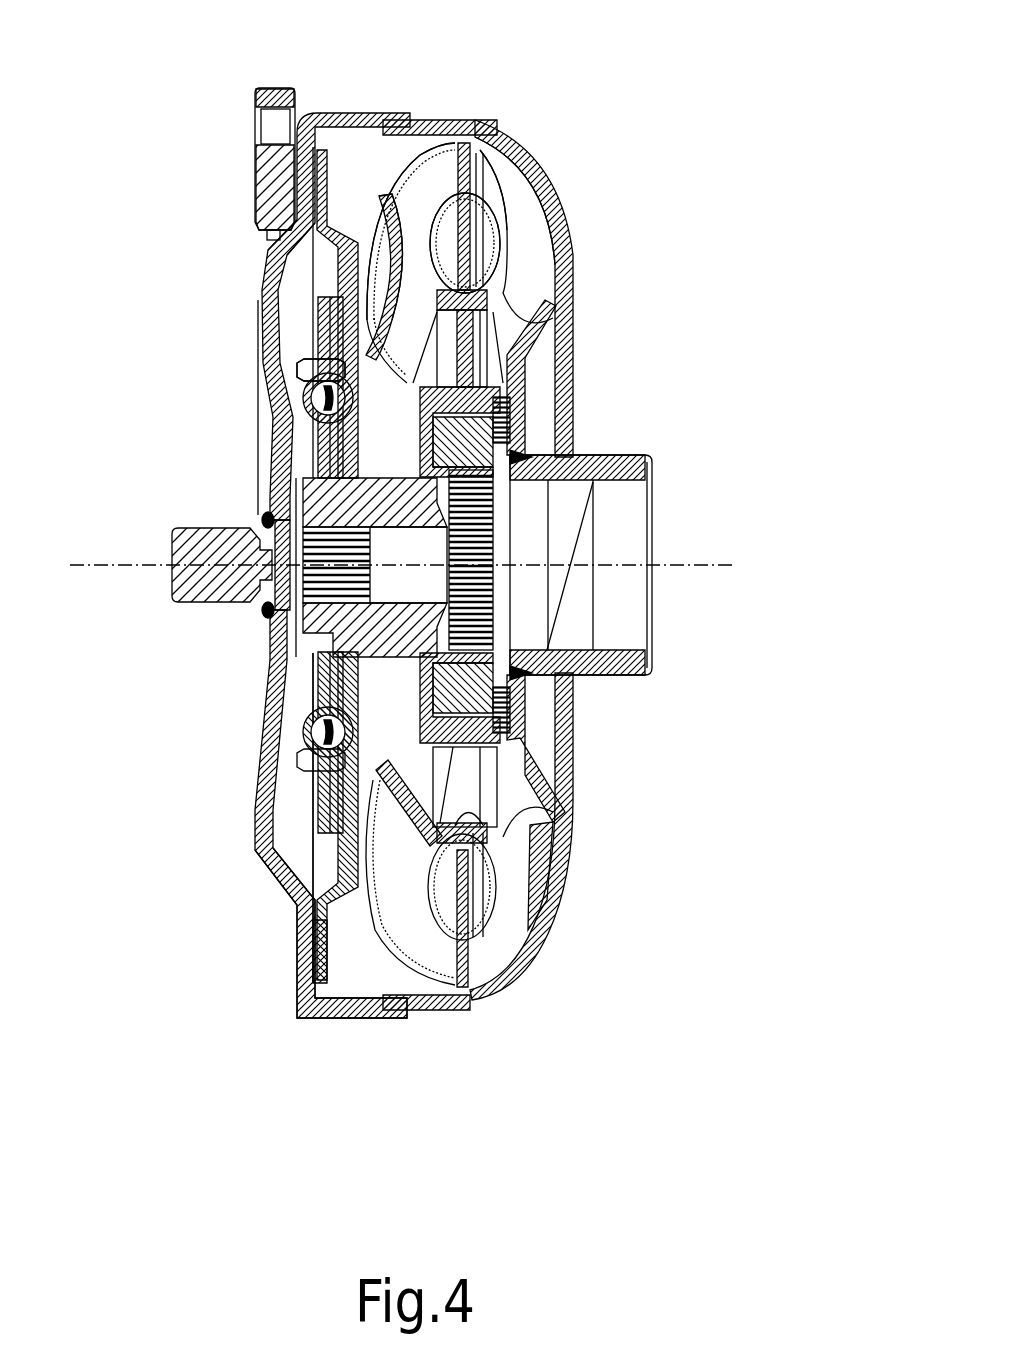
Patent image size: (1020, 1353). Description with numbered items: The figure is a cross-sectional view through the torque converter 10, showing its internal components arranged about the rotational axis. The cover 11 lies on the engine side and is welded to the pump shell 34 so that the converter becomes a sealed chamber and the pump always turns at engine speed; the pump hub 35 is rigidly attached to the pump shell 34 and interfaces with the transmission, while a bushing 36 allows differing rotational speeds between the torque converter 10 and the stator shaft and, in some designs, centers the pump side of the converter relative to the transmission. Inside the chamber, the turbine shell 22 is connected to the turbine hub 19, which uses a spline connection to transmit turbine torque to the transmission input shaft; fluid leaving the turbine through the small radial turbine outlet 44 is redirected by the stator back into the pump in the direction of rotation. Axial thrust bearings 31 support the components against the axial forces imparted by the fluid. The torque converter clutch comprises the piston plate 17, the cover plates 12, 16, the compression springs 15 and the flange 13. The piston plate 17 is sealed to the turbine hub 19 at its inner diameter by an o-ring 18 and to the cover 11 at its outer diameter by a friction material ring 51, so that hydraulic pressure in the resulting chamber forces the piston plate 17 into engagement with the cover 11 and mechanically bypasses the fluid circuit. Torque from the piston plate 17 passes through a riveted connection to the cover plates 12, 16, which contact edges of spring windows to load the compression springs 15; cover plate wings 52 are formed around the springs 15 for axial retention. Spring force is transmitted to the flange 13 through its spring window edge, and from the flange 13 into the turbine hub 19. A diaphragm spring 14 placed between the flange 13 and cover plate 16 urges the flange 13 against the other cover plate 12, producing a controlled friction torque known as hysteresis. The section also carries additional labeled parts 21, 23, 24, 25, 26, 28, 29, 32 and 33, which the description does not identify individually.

The torque converter 10 is at (583, 151).
The cover 11 is at (262, 298).
The cover plate 12 is at (312, 334).
The flange 13 is at (267, 878).
The diaphragm spring 14 is at (332, 443).
The compression springs 15 is at (307, 730).
The cover plate 16 is at (310, 353).
The piston plate 17 is at (272, 262).
The o-ring 18 is at (335, 625).
The turbine hub 19 is at (333, 620).
The inner wall band 21 is at (500, 740).
The turbine shell 22 is at (420, 183).
The spring band 23 is at (380, 150).
The support plate 24 is at (448, 190).
The hub carrier block 25 is at (500, 335).
The lower carrier block 26 is at (500, 698).
The gear spline 28 is at (520, 652).
The slanted plate 29 is at (530, 450).
The axial thrust bearings 31 is at (545, 430).
The cavity wall 32 is at (493, 165).
The housing 33 is at (530, 215).
The pump shell 34 is at (520, 217).
The pump hub 35 is at (632, 457).
The bushing 36 is at (572, 510).
The turbine outlet 44 is at (340, 760).
The friction material ring 51 is at (303, 953).
The cover plate wings 52 is at (262, 835).